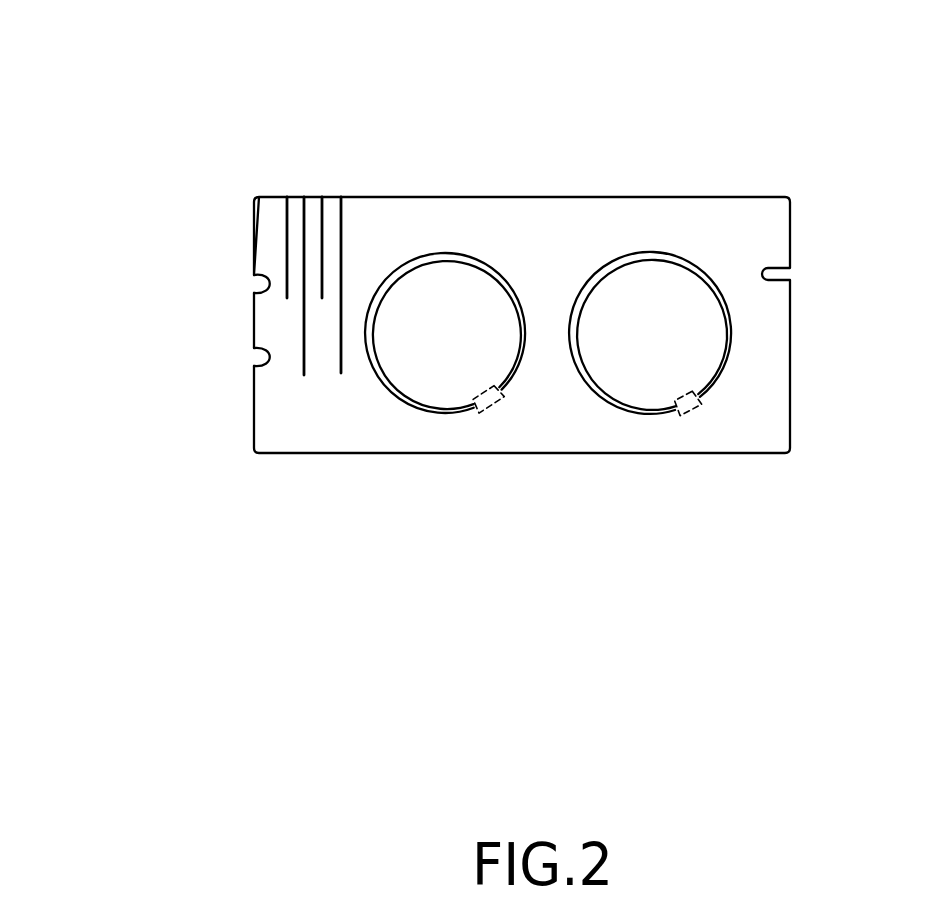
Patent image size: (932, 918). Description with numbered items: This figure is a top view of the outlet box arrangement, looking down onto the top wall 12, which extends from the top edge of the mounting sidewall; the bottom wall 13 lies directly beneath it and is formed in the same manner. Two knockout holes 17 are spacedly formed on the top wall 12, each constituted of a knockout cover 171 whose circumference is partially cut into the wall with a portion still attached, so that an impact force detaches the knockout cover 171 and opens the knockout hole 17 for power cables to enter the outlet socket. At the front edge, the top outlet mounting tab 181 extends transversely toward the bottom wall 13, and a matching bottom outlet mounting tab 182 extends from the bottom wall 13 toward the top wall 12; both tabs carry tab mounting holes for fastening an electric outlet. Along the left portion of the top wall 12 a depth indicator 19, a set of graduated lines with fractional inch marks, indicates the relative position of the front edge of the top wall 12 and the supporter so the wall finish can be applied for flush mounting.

The top wall 12 is at (585, 256).
The bottom wall 13 is at (699, 207).
The knockout hole 17 is at (646, 424).
The knockout cover 171 is at (697, 342).
The top outlet mounting tab 181 is at (195, 412).
The bottom outlet mounting tab 182 is at (262, 357).
The depth indicator 19 is at (312, 196).